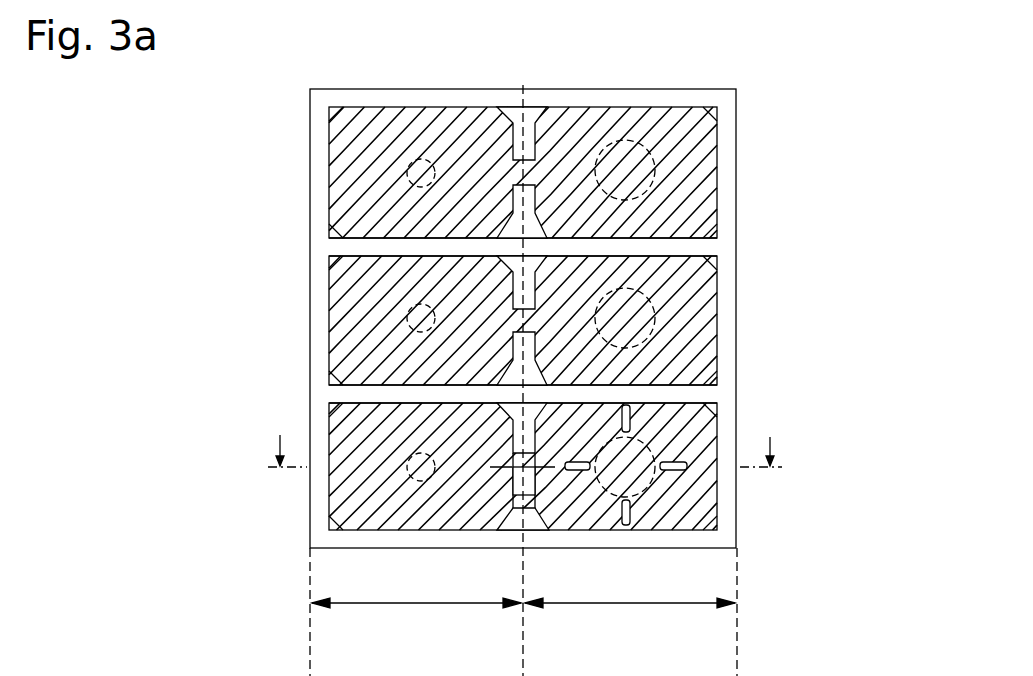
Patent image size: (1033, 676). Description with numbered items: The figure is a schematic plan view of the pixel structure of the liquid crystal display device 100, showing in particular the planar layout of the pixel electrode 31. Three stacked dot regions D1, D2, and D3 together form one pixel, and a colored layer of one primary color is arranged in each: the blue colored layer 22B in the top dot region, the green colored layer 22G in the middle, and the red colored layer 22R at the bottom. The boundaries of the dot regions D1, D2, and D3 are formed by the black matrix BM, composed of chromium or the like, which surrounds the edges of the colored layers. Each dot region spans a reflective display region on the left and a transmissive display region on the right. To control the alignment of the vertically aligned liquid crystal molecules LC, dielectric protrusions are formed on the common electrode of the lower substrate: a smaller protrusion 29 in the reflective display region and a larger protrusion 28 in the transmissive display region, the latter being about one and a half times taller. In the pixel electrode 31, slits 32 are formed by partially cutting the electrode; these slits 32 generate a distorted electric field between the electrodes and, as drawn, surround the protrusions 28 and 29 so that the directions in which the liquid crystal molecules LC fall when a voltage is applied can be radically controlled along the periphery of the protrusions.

The liquid crystal display device 100 is at (728, 76).
The pixel electrode 31 is at (717, 140).
The black matrix BM is at (330, 382).
The dot region D1 is at (342, 138).
The dot region D2 is at (342, 285).
The dot region D3 is at (342, 506).
The blue colored layer 22B is at (705, 208).
The green colored layer 22G is at (700, 361).
The red colored layer 22R is at (700, 521).
The slits 32 is at (520, 104).
The protrusion 29 is at (412, 163).
The protrusion 28 is at (652, 160).
The liquid crystal molecules LC is at (712, 440).